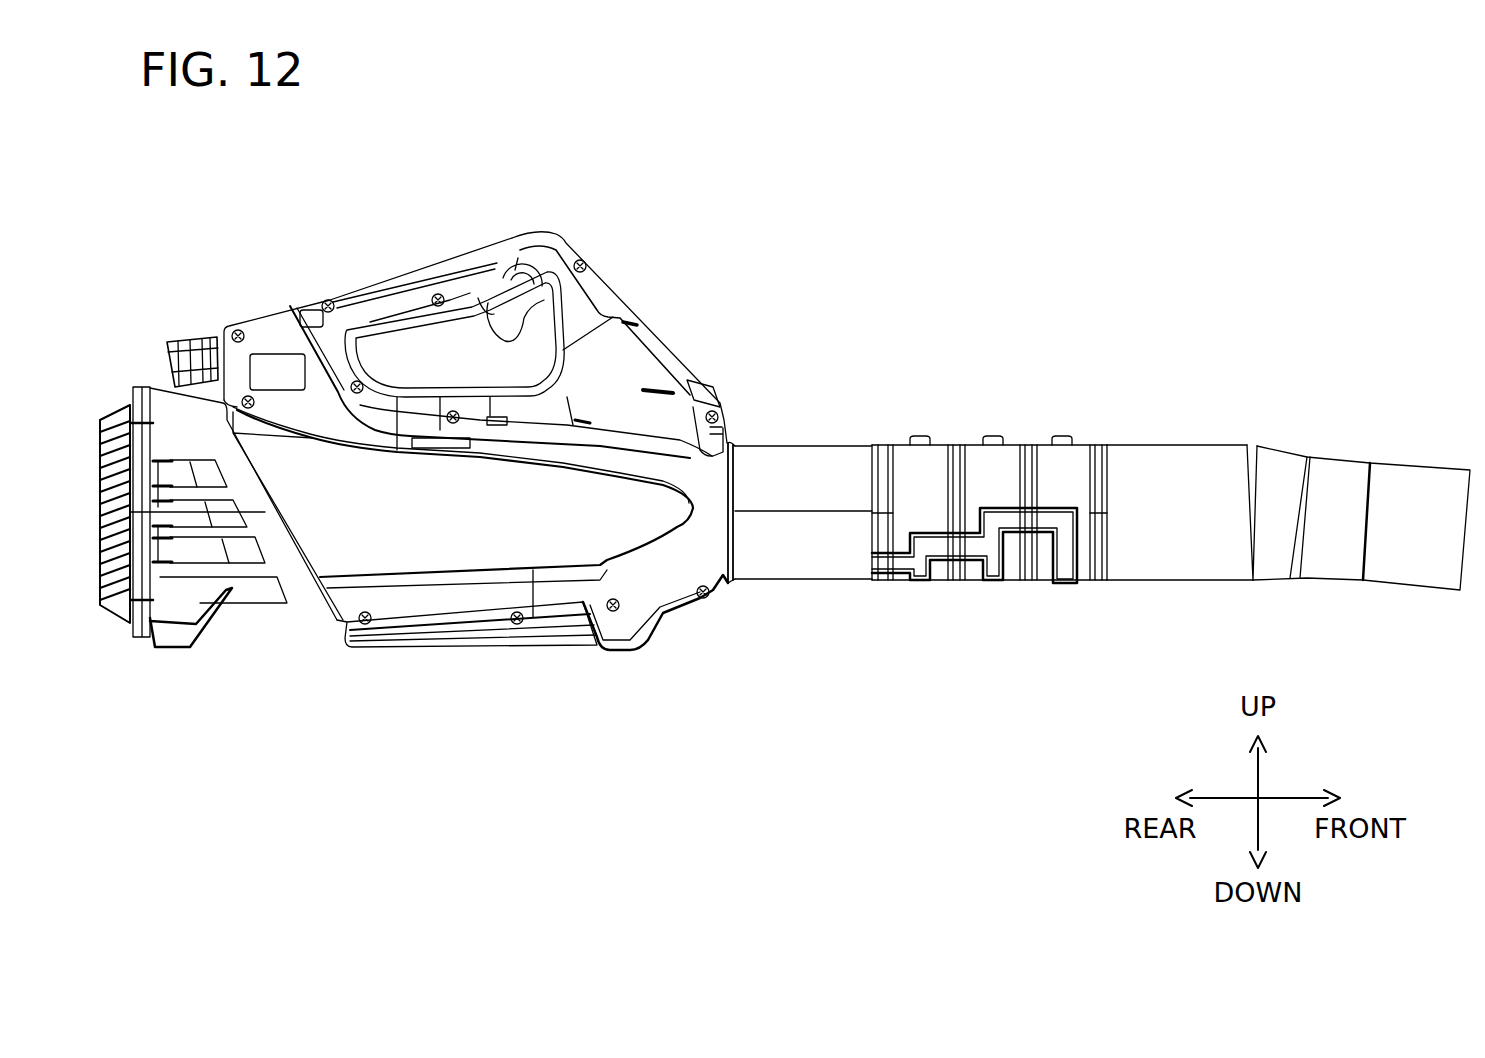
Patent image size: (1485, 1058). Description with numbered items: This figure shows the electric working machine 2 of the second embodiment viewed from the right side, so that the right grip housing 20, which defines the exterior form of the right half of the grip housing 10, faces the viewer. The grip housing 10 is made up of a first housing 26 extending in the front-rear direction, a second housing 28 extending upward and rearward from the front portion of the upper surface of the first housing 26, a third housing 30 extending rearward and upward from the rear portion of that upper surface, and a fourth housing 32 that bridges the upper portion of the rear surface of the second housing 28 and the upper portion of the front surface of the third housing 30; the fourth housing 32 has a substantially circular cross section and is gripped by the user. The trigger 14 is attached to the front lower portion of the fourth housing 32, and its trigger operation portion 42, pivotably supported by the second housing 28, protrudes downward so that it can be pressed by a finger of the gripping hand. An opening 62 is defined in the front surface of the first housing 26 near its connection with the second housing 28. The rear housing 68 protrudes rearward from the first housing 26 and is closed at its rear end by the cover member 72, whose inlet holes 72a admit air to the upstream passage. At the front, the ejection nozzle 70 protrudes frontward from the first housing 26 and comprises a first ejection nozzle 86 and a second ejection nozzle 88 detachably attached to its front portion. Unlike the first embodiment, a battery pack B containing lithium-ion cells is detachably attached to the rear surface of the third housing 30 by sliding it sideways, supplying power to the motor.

The electric working machine 2 is at (1222, 213).
The grip housing 10 is at (714, 565).
The trigger 14 is at (503, 320).
The right grip housing 20 is at (681, 578).
The first housing 26 is at (465, 550).
The second housing 28 is at (618, 357).
The third housing 30 is at (274, 368).
The fourth housing 32 is at (417, 288).
The trigger operation portion 42 is at (523, 307).
The opening 62 is at (728, 430).
The rear housing 68 is at (237, 572).
The ejection nozzle 70 is at (1053, 369).
The cover member 72 is at (137, 632).
The inlet holes 72a is at (108, 412).
The first ejection nozzle 86 is at (822, 458).
The second ejection nozzle 88 is at (1185, 458).
The battery pack B is at (184, 338).